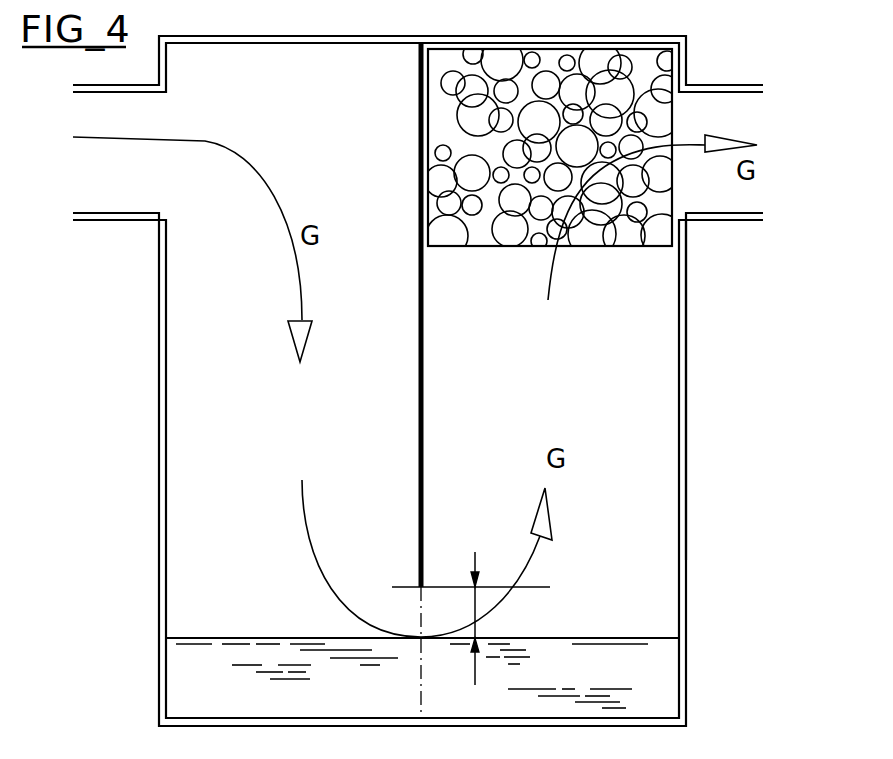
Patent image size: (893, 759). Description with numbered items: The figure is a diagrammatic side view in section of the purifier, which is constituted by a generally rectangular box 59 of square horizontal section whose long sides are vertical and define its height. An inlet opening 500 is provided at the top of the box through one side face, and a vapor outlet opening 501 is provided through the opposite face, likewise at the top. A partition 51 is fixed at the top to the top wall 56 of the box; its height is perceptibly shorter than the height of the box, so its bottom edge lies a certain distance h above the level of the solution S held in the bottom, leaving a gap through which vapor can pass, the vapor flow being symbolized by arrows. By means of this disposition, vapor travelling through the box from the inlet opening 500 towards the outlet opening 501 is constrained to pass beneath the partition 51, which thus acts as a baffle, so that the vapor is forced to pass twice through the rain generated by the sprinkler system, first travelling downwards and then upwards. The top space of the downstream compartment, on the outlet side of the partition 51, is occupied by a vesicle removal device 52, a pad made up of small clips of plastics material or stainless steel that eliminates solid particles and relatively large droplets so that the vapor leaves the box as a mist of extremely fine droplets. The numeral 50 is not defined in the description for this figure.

The separator housing 50 is at (142, 392).
The partition 51 is at (418, 422).
The vesicle removal device 52 is at (513, 206).
The top wall 56 is at (256, 44).
The box 59 is at (688, 380).
The inlet opening 500 is at (95, 212).
The vapor outlet opening 501 is at (757, 211).
The solution S is at (641, 660).
The distance h is at (462, 618).